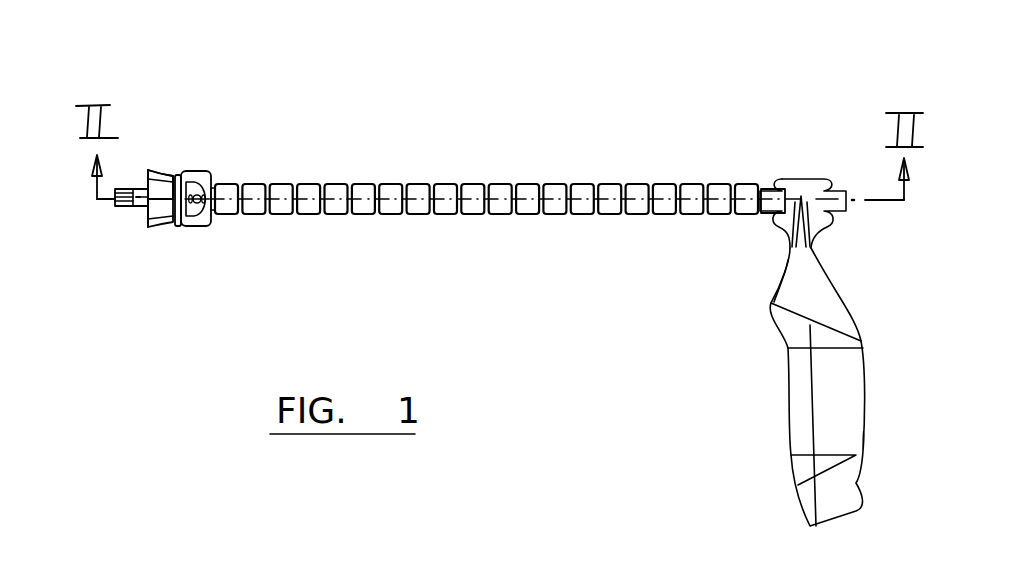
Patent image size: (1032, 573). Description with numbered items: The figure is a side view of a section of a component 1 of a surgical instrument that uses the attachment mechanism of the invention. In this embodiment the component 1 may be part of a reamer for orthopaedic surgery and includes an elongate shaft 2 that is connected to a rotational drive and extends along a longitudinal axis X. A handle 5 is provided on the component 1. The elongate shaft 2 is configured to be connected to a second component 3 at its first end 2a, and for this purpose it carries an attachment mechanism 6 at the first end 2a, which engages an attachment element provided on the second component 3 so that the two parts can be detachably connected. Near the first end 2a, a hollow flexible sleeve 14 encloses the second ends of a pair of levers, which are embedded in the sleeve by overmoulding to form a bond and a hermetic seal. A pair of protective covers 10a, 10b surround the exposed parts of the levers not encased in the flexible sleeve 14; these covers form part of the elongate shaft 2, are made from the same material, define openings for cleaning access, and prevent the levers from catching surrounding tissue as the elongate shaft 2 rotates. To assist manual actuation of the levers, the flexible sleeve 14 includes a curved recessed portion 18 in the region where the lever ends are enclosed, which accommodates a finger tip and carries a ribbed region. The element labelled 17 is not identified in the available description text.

The component 1 is at (628, 253).
The elongate shaft 2 is at (367, 187).
The first end 2a is at (283, 181).
The second component 3 is at (113, 214).
The handle 5 is at (843, 378).
The attachment mechanism 6 is at (164, 172).
The protective cover 10a is at (176, 176).
The protective cover 10b is at (161, 224).
The flexible sleeve 14 is at (200, 228).
The tip shaft 17 is at (124, 210).
The curved recessed portion 18 is at (208, 192).
The longitudinal axis X is at (553, 198).